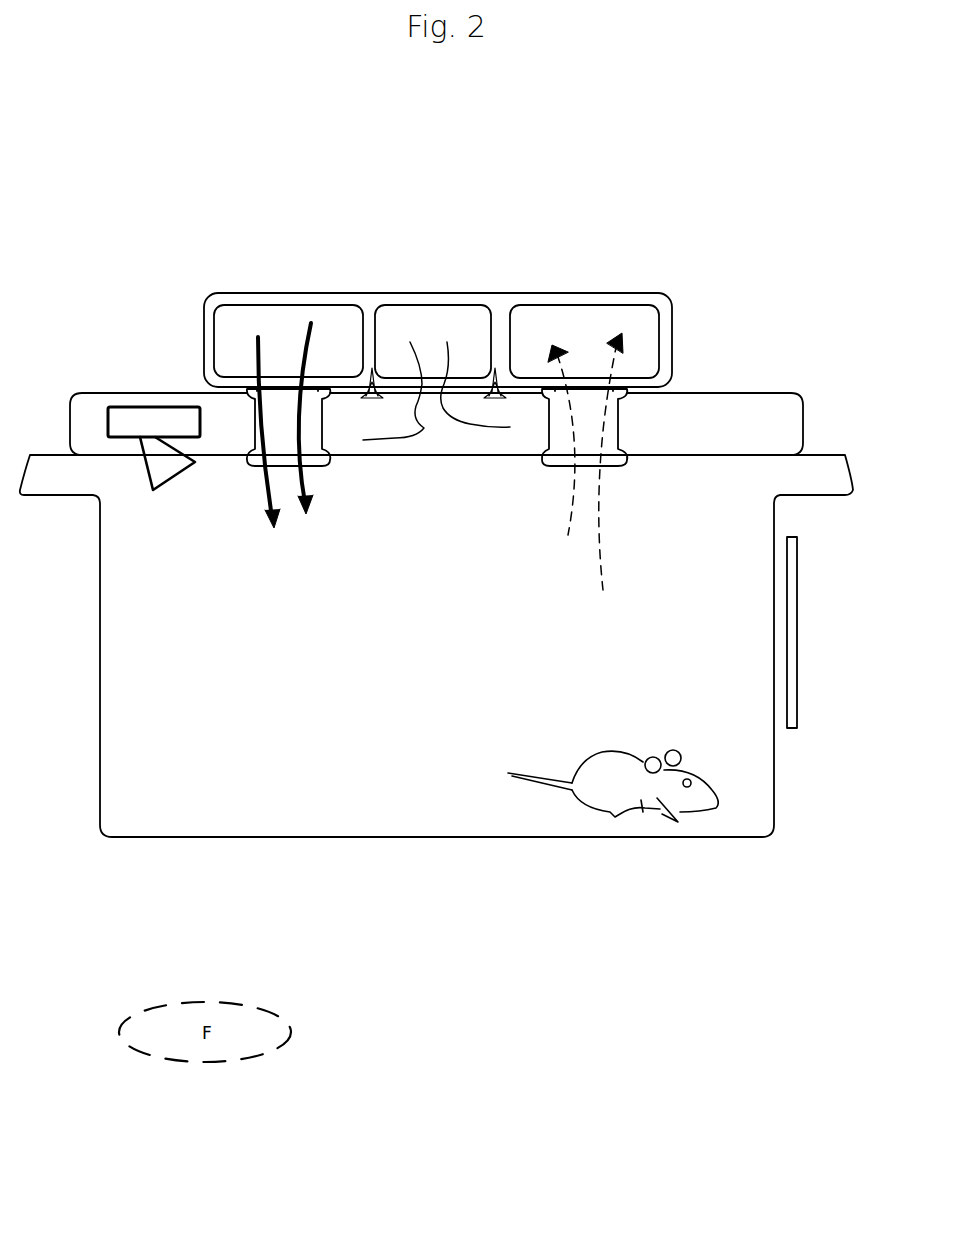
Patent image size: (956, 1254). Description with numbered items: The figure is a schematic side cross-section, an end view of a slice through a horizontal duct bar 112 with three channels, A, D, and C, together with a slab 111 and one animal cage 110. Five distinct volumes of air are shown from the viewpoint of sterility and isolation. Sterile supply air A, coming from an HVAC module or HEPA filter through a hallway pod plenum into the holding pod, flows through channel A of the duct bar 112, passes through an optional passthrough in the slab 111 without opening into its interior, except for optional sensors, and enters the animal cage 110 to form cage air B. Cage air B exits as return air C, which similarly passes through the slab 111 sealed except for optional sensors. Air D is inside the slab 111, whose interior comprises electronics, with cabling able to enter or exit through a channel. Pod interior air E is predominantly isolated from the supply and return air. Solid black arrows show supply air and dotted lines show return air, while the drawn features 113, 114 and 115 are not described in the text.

The animal cage 110 is at (40, 455).
The slab 111 is at (130, 394).
The horizontal duct bar 112 is at (245, 293).
The sensor 113 is at (786, 632).
The sensor plate 114 is at (786, 566).
The water nozzle 115 is at (157, 457).